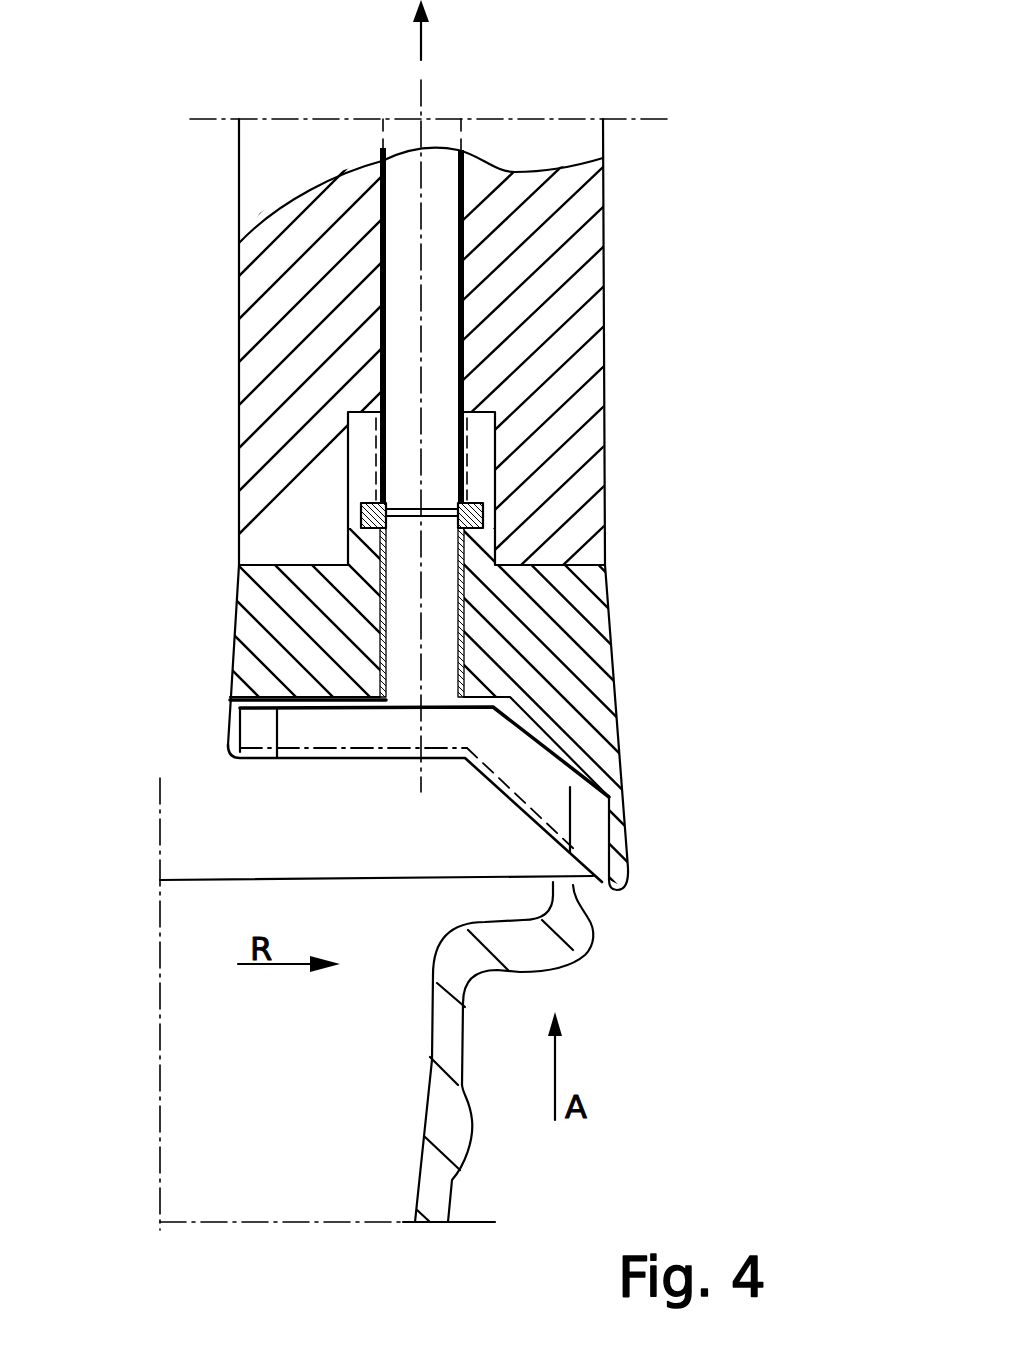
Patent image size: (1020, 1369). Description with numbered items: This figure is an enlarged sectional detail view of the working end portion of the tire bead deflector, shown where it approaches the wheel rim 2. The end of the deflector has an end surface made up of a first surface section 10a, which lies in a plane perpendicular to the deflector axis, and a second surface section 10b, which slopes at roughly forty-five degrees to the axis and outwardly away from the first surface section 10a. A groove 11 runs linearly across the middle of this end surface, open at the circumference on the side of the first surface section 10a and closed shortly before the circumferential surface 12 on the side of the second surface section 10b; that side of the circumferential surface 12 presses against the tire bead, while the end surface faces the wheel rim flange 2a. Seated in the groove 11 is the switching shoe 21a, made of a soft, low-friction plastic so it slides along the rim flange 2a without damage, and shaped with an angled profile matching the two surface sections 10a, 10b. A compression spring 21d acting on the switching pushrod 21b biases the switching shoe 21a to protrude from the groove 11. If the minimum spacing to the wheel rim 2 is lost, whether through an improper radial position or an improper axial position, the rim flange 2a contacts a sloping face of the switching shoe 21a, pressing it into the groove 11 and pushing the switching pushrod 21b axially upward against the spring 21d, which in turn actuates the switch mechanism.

The wheel rim 2 is at (435, 1192).
The wheel rim flange 2a is at (598, 924).
The first surface section 10a is at (228, 747).
The second surface section 10b is at (507, 782).
The groove 11 is at (540, 735).
The circumferential surface 12 is at (628, 841).
The switching shoe 21a is at (323, 737).
The switching pushrod 21b is at (443, 594).
The compression spring 21d is at (377, 471).